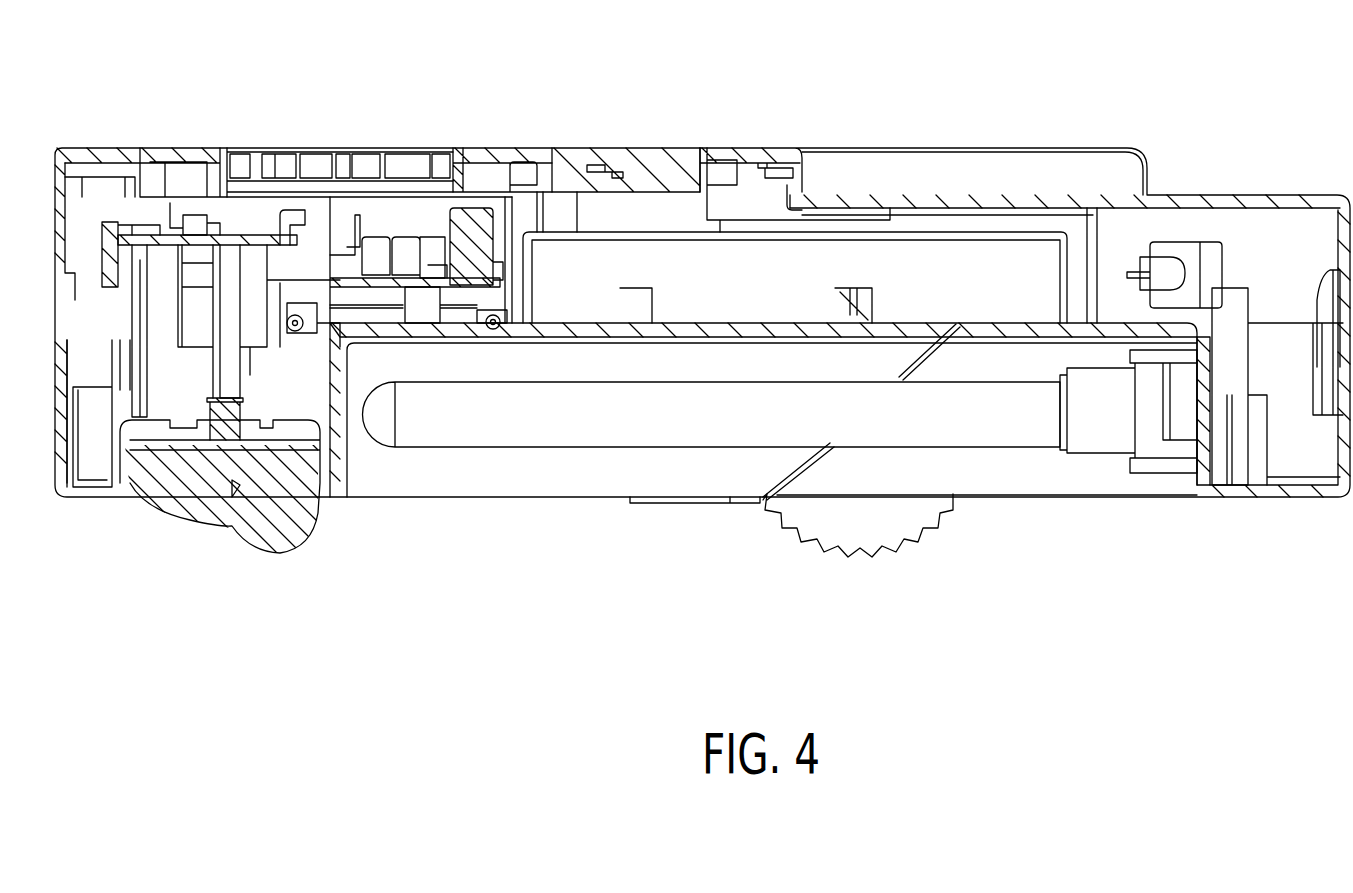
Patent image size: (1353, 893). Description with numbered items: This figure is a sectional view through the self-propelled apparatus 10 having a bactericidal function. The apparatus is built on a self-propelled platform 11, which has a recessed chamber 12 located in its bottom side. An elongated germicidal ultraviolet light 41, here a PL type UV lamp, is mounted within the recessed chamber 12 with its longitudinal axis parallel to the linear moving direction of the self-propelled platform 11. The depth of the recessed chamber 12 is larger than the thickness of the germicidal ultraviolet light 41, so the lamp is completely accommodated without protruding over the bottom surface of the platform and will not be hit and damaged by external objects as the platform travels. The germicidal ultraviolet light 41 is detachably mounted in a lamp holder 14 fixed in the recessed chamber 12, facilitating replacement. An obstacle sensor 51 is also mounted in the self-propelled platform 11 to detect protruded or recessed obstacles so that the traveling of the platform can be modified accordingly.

The self-propelled apparatus 10 is at (1089, 127).
The self-propelled platform 11 is at (1202, 190).
The recessed chamber 12 is at (365, 478).
The lamp holder 14 is at (1153, 473).
The germicidal ultraviolet light 41 is at (457, 450).
The obstacle sensor 51 is at (83, 148).